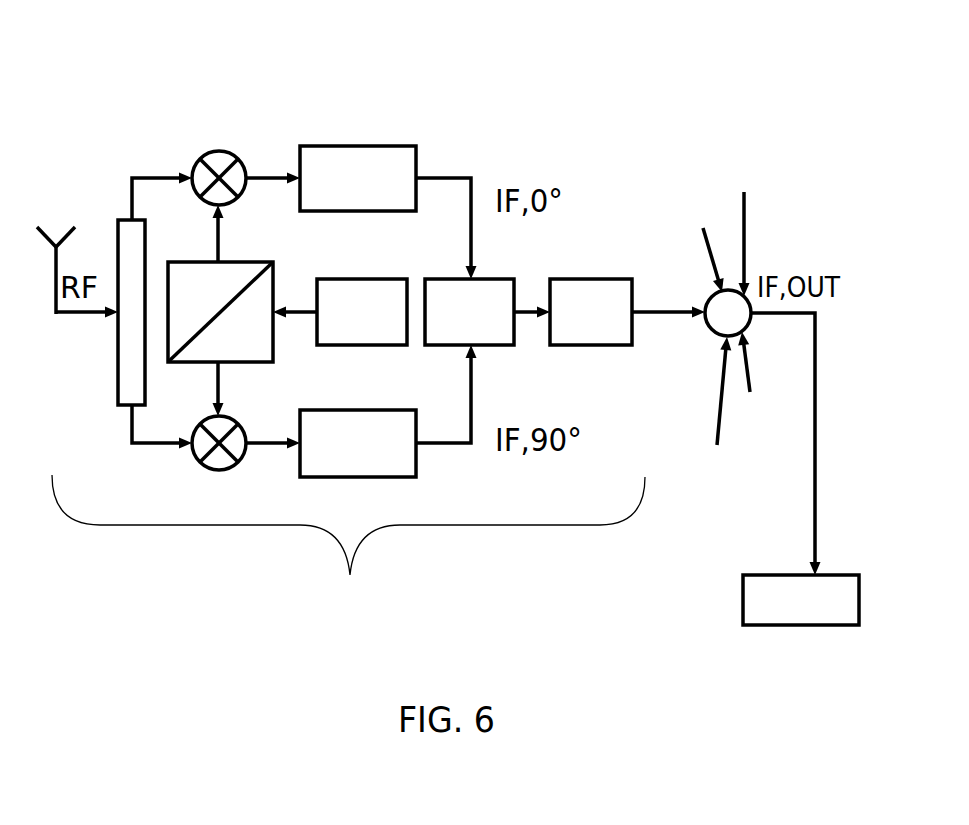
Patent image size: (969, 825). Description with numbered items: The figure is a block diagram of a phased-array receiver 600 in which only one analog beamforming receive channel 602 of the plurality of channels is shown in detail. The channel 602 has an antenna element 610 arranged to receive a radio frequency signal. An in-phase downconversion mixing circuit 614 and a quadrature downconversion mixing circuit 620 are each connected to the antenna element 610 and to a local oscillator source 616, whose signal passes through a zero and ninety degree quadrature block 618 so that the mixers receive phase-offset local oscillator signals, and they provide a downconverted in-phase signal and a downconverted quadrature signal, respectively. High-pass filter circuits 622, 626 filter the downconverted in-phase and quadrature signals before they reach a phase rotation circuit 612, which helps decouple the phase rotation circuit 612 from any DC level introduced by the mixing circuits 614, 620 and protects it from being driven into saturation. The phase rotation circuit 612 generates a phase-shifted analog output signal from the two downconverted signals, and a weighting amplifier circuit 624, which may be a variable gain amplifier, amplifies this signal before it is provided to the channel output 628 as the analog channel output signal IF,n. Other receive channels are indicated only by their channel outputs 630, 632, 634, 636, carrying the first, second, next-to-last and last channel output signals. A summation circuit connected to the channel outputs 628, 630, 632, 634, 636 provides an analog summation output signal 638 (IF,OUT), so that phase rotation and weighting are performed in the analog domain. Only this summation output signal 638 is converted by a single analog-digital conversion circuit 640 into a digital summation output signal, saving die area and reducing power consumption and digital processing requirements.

The phased-array receiver 600 is at (450, 30).
The analog beamforming receive channel 602 is at (348, 541).
The antenna element 610 is at (53, 242).
The phase rotation circuit 612 is at (469, 312).
The in-phase downconversion mixing circuit 614 is at (217, 163).
The local oscillator source 616 is at (353, 297).
The quadrature phase shifter 618 is at (253, 277).
The quadrature downconversion mixing circuit 620 is at (237, 437).
The high-pass filter circuit 622 is at (358, 178).
The weighting amplifier circuit 624 is at (591, 312).
The high-pass filter circuit 626 is at (358, 443).
The channel output 628 is at (643, 310).
The channel output 630 is at (748, 230).
The channel output 632 is at (707, 241).
The channel output 634 is at (722, 393).
The channel output 636 is at (749, 382).
The analog summation output signal 638 is at (816, 340).
The analog-digital conversion circuit 640 is at (762, 593).